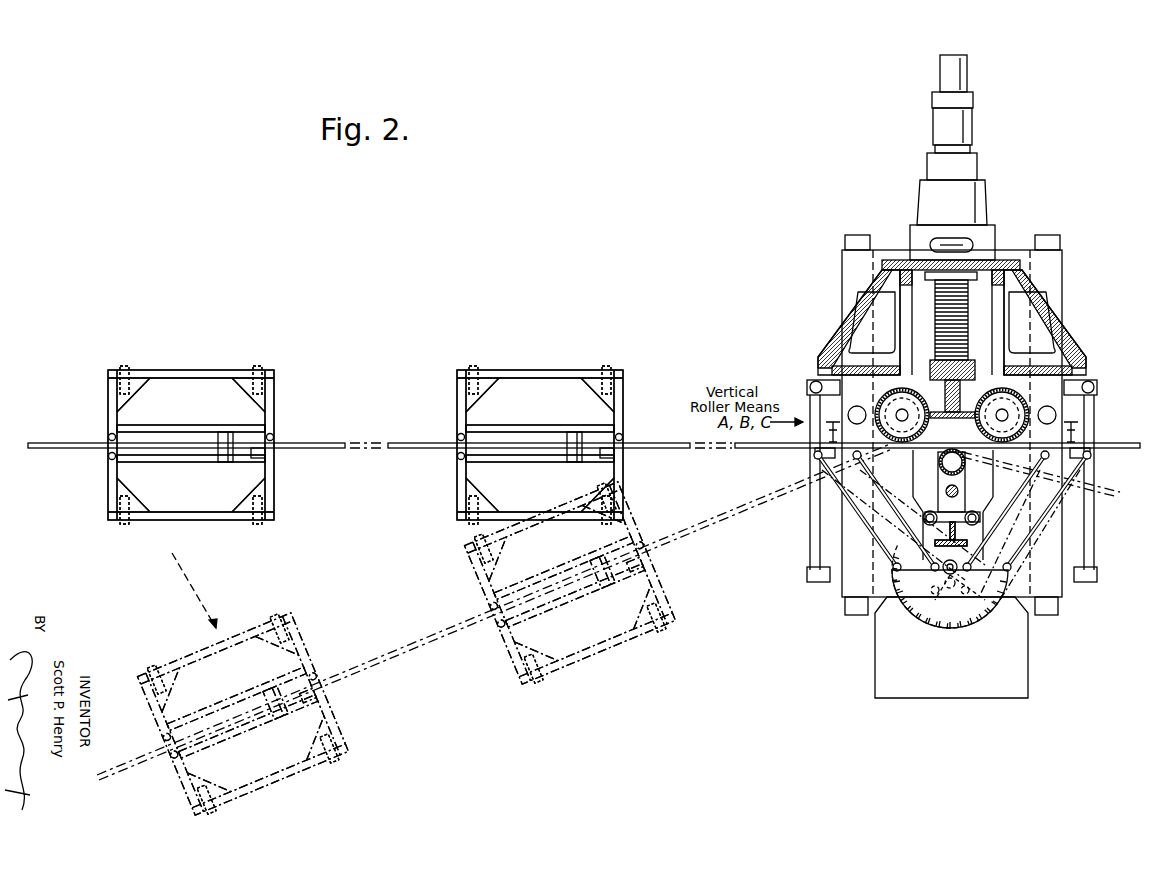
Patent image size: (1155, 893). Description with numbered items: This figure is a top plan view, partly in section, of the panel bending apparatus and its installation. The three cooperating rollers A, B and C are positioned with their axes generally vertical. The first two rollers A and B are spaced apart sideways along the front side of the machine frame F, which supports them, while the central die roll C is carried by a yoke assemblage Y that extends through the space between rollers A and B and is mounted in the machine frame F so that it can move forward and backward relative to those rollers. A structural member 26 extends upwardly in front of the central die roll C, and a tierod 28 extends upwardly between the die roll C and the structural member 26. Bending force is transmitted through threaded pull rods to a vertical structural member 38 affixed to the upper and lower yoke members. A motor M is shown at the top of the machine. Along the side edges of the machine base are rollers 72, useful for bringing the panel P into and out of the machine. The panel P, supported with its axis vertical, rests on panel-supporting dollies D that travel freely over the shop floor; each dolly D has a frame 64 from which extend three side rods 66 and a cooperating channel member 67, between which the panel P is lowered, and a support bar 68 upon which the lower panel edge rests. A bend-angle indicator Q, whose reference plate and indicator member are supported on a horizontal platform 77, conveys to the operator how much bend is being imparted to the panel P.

The structural member 26 is at (957, 530).
The tierod 28 is at (959, 491).
The vertical structural member 38 is at (948, 408).
The frame 64 is at (184, 372).
The side rods 66 is at (108, 456).
The channel member 67 is at (258, 455).
The support bar 68 is at (218, 437).
The rollers 72 is at (810, 515).
The horizontal platform 77 is at (1028, 636).
The motor M is at (972, 128).
The machine frame F is at (855, 310).
The yoke assemblage Y is at (897, 470).
The first roller A is at (886, 396).
The second roller B is at (1018, 396).
The central die roll C is at (966, 462).
The panel P is at (1118, 465).
The dollies D is at (456, 488).
The bend-angle indicator Q is at (945, 628).